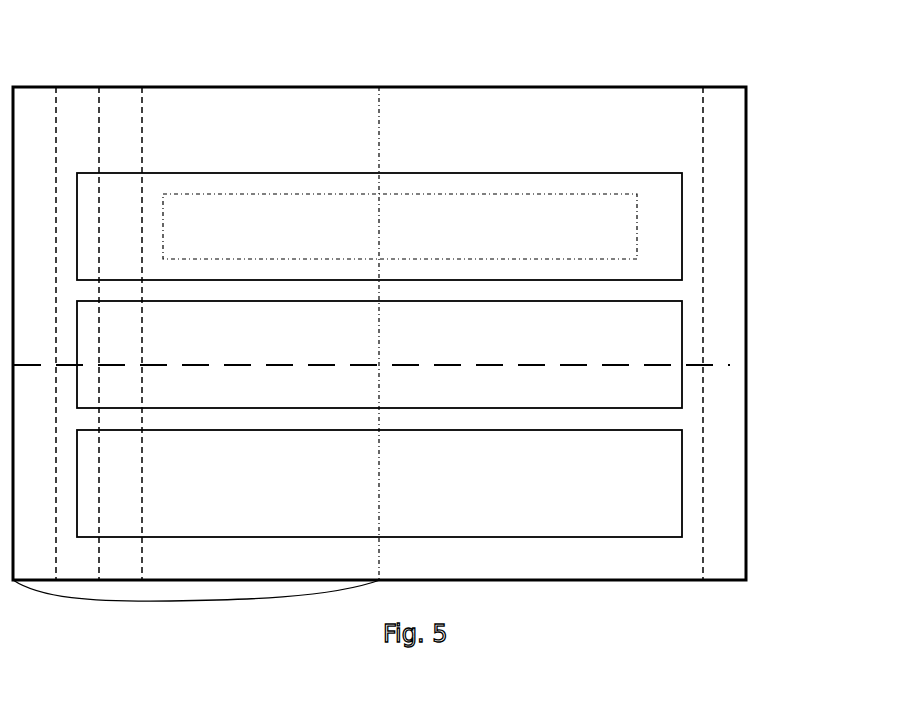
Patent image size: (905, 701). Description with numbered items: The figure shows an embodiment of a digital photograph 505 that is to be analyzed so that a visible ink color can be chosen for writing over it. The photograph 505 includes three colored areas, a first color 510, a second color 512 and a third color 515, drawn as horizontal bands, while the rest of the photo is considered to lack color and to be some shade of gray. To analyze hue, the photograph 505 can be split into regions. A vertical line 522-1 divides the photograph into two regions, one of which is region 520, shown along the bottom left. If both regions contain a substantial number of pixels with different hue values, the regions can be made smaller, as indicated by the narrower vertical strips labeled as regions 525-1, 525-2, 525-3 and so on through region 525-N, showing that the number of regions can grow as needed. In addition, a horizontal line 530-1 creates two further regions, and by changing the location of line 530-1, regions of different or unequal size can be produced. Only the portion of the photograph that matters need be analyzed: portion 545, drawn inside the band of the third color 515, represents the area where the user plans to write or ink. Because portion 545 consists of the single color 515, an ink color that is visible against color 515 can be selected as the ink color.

The digital photograph 505 is at (676, 597).
The first color 510 is at (682, 463).
The second color 512 is at (682, 323).
The third color 515 is at (682, 240).
The region 520 is at (160, 600).
The line 522-1 is at (380, 125).
The region 525-1 is at (23, 100).
The region 525-2 is at (75, 99).
The region 525-3 is at (121, 108).
The region 525-N is at (723, 100).
The line 530-1 is at (717, 366).
The portion 545 is at (507, 194).